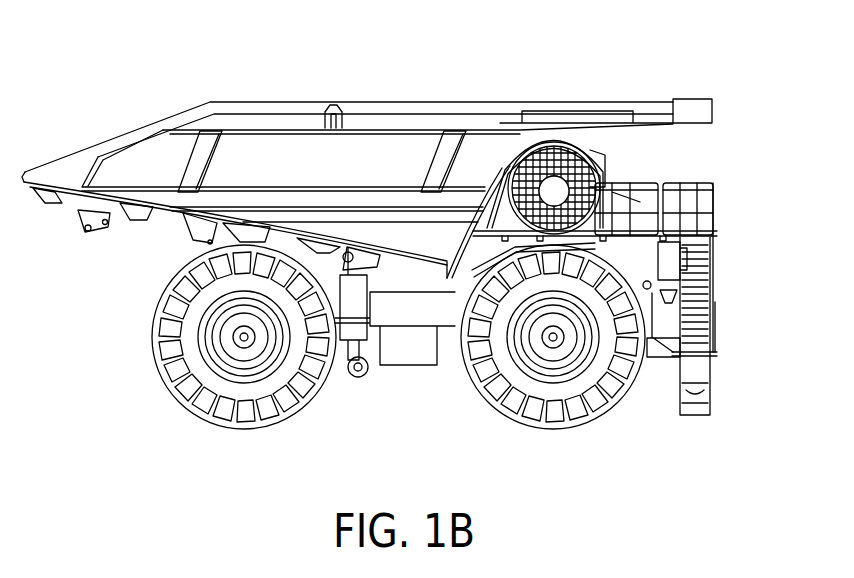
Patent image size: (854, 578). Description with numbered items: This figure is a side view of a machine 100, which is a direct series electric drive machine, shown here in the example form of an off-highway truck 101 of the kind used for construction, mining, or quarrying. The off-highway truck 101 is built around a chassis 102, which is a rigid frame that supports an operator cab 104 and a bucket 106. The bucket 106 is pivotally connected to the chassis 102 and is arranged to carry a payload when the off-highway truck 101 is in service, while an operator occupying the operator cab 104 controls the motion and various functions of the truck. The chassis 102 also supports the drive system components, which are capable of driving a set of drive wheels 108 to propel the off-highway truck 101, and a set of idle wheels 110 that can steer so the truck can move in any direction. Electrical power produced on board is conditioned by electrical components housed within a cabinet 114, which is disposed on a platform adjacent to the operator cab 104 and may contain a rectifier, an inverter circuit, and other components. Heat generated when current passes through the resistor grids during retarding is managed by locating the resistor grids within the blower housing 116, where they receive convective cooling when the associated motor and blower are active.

The machine 100 is at (632, 89).
The off-highway truck 101 is at (134, 279).
The chassis 102 is at (457, 318).
The operator cab 104 is at (607, 163).
The bucket 106 is at (262, 120).
The drive wheels 108 is at (278, 387).
The idle wheels 110 is at (542, 390).
The cabinet 114 is at (506, 209).
The blower housing 116 is at (575, 155).